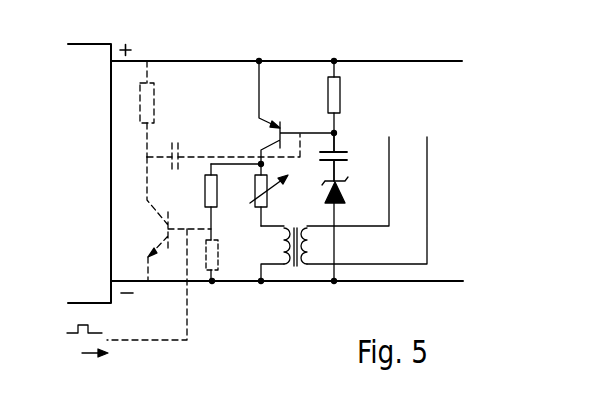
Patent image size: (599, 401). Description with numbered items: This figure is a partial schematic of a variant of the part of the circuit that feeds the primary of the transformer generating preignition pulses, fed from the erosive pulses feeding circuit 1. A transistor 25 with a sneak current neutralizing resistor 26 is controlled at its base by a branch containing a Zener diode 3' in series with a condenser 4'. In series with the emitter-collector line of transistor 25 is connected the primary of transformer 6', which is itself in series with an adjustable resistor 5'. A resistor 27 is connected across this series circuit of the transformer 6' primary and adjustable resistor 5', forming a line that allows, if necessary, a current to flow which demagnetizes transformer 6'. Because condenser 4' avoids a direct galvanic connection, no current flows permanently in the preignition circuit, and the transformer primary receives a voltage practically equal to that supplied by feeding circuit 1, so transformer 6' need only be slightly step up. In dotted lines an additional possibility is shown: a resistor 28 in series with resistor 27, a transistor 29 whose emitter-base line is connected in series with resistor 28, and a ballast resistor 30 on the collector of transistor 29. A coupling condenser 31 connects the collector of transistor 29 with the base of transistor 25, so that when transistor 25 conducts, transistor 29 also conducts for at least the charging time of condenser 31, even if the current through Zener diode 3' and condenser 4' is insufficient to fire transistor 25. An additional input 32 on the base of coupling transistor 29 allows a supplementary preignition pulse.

The feeding circuit 1 is at (94, 171).
The ballast resistor 30 is at (163, 109).
The coupling condenser 31 is at (223, 152).
The transistor 29 is at (169, 219).
The additional input 32 is at (127, 301).
The resistor 27 is at (224, 202).
The resistor 28 is at (219, 254).
The transistor 25 is at (282, 113).
The sneak current neutralizing resistor 26 is at (340, 96).
The condenser 4' is at (344, 157).
The Zener diode 3' is at (345, 230).
The adjustable resistor 5' is at (274, 195).
The transformer 6' is at (337, 210).